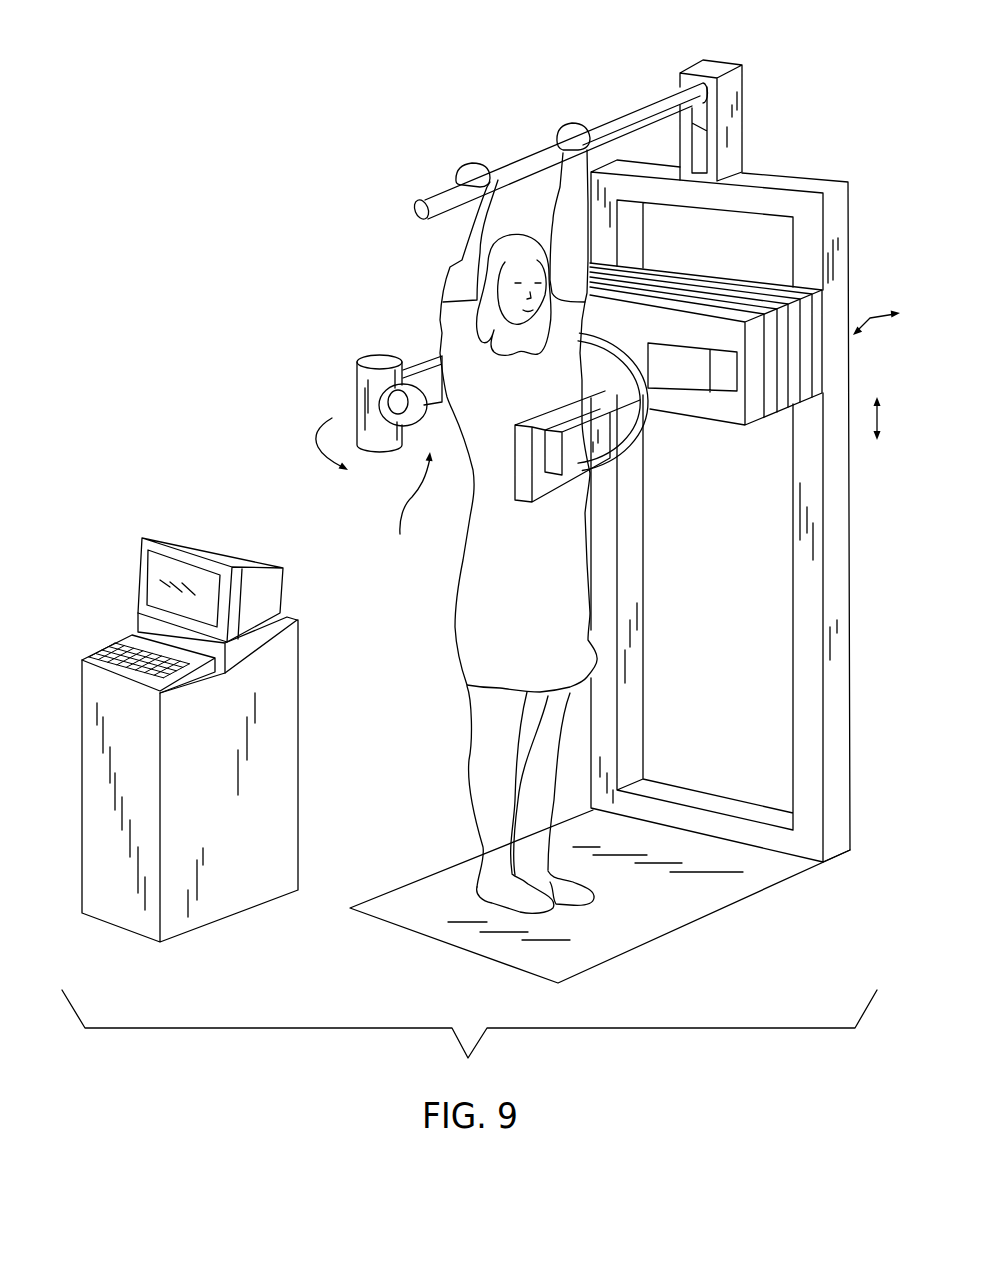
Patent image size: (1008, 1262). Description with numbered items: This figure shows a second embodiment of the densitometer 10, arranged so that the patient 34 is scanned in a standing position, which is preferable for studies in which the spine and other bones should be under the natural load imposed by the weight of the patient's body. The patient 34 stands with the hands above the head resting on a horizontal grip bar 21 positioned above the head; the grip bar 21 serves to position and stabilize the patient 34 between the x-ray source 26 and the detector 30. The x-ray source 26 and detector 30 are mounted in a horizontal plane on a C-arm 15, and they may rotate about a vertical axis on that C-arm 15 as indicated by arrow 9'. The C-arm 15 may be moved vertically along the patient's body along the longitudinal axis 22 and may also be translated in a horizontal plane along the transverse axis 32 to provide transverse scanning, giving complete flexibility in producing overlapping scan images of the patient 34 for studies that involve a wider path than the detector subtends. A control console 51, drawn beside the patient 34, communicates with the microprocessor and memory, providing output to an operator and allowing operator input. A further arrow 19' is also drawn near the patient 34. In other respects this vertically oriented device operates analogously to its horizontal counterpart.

The densitometer 10 is at (662, 64).
The horizontal grip bar 21 is at (644, 107).
The transverse axis 32 is at (870, 318).
The longitudinal axis 22 is at (877, 414).
The C-arm 15 is at (647, 430).
The x-ray source 26 is at (356, 382).
The arrow 9' is at (292, 435).
The detector 30 is at (508, 462).
The direction arrow 19' is at (408, 508).
The control console 51 is at (188, 543).
The patient 34 is at (456, 624).